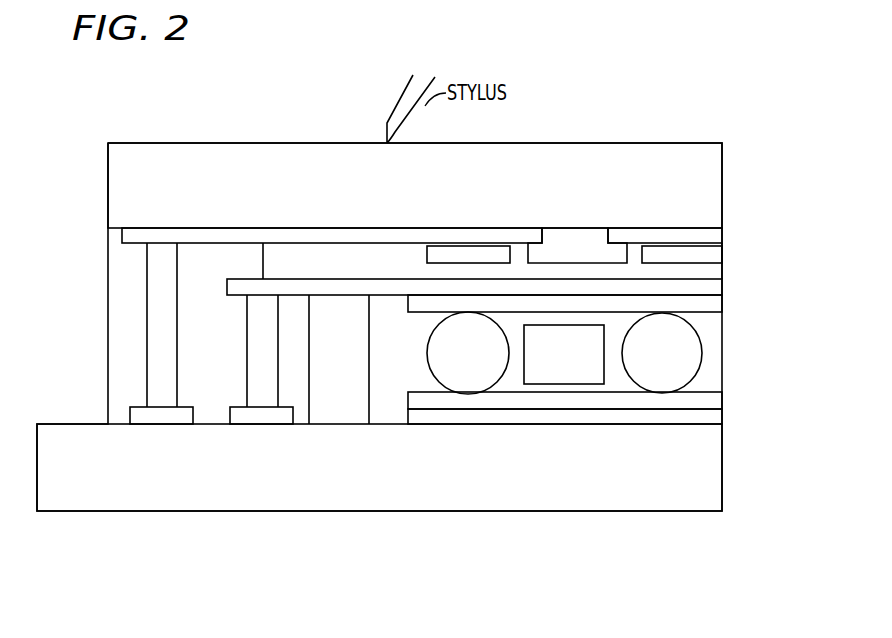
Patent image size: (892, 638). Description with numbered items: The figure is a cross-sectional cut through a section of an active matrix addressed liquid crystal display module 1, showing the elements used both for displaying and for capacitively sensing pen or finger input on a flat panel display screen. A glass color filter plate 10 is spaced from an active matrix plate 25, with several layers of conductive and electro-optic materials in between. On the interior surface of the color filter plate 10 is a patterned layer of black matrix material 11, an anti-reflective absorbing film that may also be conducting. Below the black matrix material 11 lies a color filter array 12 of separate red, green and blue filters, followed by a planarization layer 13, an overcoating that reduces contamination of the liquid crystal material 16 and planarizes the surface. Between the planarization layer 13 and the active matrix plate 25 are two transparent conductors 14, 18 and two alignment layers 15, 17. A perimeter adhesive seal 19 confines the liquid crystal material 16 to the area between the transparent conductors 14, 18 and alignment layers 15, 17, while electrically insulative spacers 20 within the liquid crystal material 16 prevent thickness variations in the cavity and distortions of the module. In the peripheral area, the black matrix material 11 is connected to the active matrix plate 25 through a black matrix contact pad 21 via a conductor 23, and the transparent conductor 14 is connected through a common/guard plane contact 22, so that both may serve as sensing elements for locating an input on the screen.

The liquid crystal display module 1 is at (597, 97).
The color filter plate 10 is at (128, 162).
The black matrix material 11 is at (82, 212).
The color filter array 12 is at (575, 240).
The planarization layer 13 is at (296, 262).
The transparent conductor 14 is at (713, 290).
The alignment layer 15 is at (703, 311).
The liquid crystal material 16 is at (588, 384).
The alignment layer 17 is at (715, 402).
The transparent conductor 18 is at (688, 419).
The perimeter adhesive seal 19 is at (339, 407).
The spacers 20 is at (564, 353).
The black matrix contact pad 21 is at (135, 407).
The common/guard plane contact 22 is at (233, 415).
The conductor 23 is at (247, 318).
The active matrix plate 25 is at (527, 503).